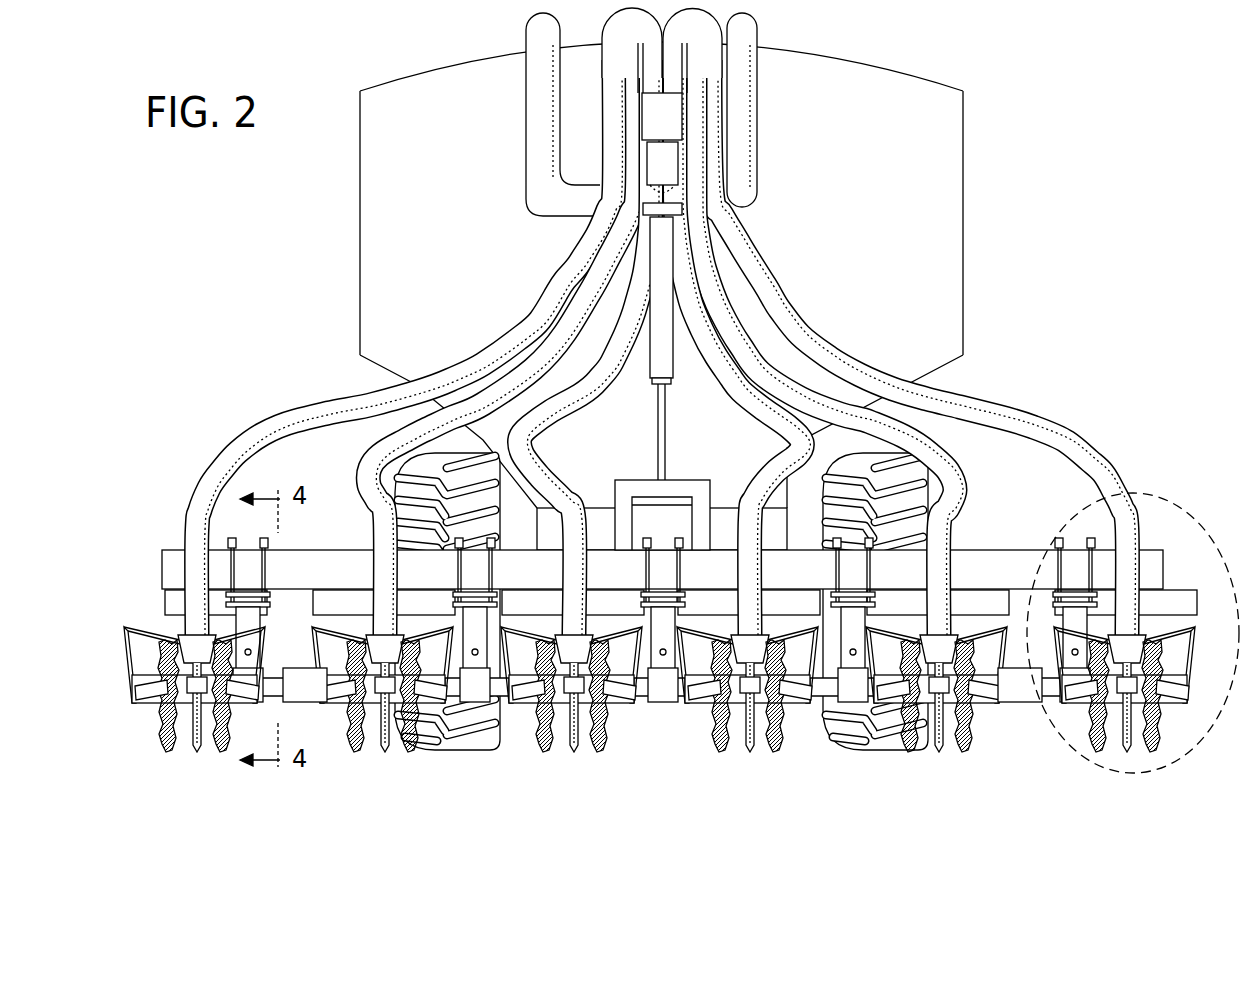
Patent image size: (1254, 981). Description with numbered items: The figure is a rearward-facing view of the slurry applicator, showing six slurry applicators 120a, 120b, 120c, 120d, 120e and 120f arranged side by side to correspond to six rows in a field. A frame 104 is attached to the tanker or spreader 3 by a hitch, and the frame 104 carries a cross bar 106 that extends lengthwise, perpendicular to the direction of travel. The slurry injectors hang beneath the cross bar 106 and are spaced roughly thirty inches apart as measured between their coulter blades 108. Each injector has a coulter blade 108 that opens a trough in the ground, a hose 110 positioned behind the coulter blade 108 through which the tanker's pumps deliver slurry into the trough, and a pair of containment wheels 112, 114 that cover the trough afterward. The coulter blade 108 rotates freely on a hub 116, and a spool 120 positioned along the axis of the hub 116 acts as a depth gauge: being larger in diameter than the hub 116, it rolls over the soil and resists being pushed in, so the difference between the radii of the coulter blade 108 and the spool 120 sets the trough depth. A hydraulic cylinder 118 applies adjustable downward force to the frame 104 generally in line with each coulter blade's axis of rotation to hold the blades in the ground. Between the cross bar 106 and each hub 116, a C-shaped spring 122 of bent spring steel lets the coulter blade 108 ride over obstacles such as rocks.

The tanker 3 is at (1163, 492).
The frame 104 is at (643, 429).
The cross bar 106 is at (170, 565).
The coulter blade 108 is at (195, 745).
The hose 110 is at (193, 607).
The containment wheel 112 is at (223, 719).
The containment wheel 114 is at (163, 717).
The hub 116 is at (1052, 707).
The hydraulic cylinder 118 is at (661, 318).
The spool 120 is at (1020, 707).
The row unit a 120a is at (357, 429).
The row unit b 120b is at (386, 754).
The row unit c 120c is at (575, 754).
The row unit d 120d is at (751, 754).
The row unit e 120e is at (940, 754).
The row unit f 120f is at (952, 429).
The C-shaped spring 122 is at (1050, 617).